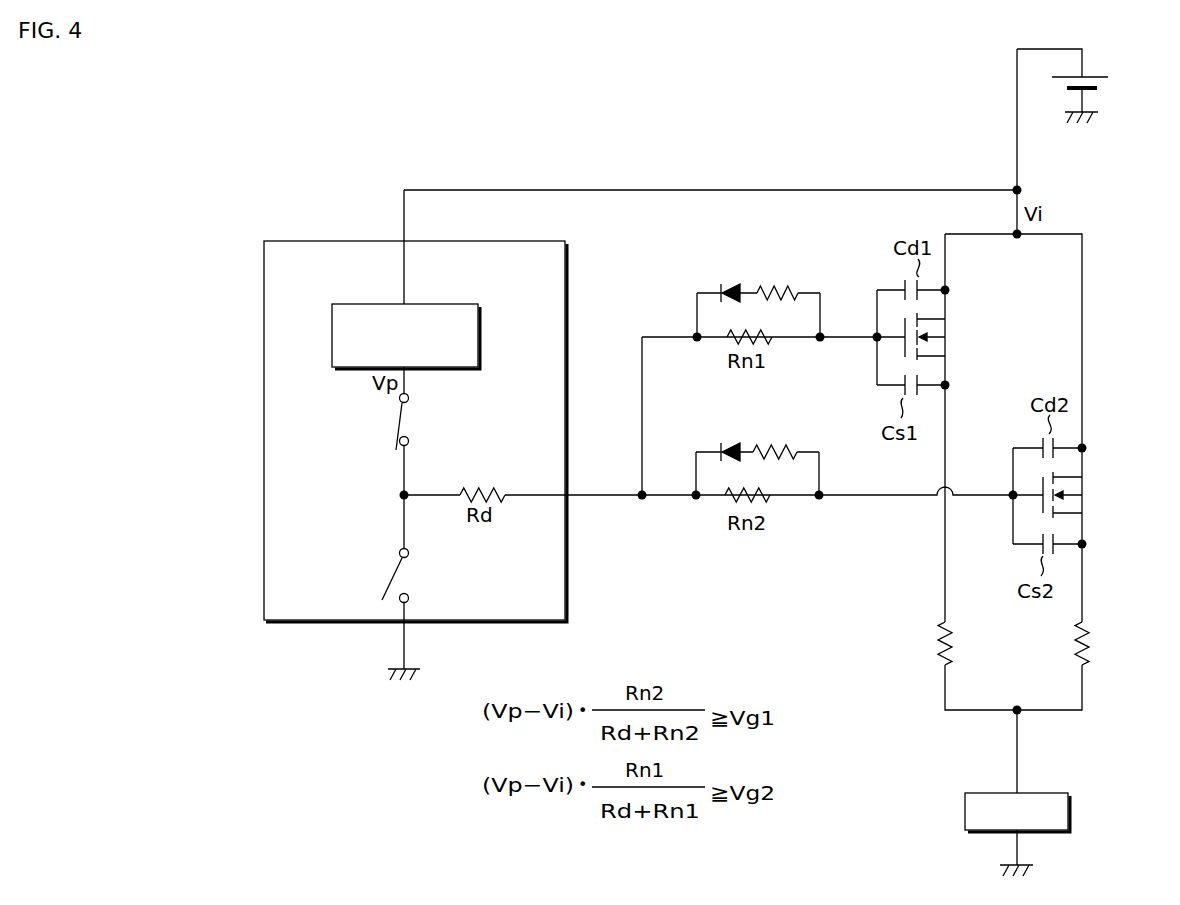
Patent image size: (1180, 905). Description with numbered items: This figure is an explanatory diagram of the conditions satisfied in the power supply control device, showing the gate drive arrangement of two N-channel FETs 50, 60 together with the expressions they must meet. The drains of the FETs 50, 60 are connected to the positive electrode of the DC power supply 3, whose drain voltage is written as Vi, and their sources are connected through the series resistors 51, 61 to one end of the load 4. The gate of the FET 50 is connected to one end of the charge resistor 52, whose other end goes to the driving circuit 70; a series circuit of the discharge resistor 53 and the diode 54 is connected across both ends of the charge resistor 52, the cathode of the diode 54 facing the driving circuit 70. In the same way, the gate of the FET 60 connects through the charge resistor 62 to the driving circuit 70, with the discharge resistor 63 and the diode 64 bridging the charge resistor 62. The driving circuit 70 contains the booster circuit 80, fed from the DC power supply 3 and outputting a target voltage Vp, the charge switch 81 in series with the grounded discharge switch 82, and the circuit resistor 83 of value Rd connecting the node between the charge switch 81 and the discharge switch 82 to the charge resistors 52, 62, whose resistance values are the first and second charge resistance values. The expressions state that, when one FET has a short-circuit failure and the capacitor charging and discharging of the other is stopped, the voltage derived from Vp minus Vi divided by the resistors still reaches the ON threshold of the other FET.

The DC power supply 3 is at (1108, 85).
The load 4 is at (1070, 805).
The FET 50 is at (948, 339).
The series resistor 51 is at (952, 648).
The charge resistor 52 is at (745, 333).
The discharge resistor 53 is at (788, 290).
The diode 54 is at (731, 282).
The FET 60 is at (1084, 490).
The series resistor 61 is at (1089, 648).
The charge resistor 62 is at (745, 492).
The discharge resistor 63 is at (786, 450).
The diode 64 is at (730, 444).
The driving circuit 70 is at (298, 240).
The booster circuit 80 is at (480, 345).
The charge switch 81 is at (411, 420).
The discharge switch 82 is at (410, 574).
The circuit resistor 83 is at (493, 483).